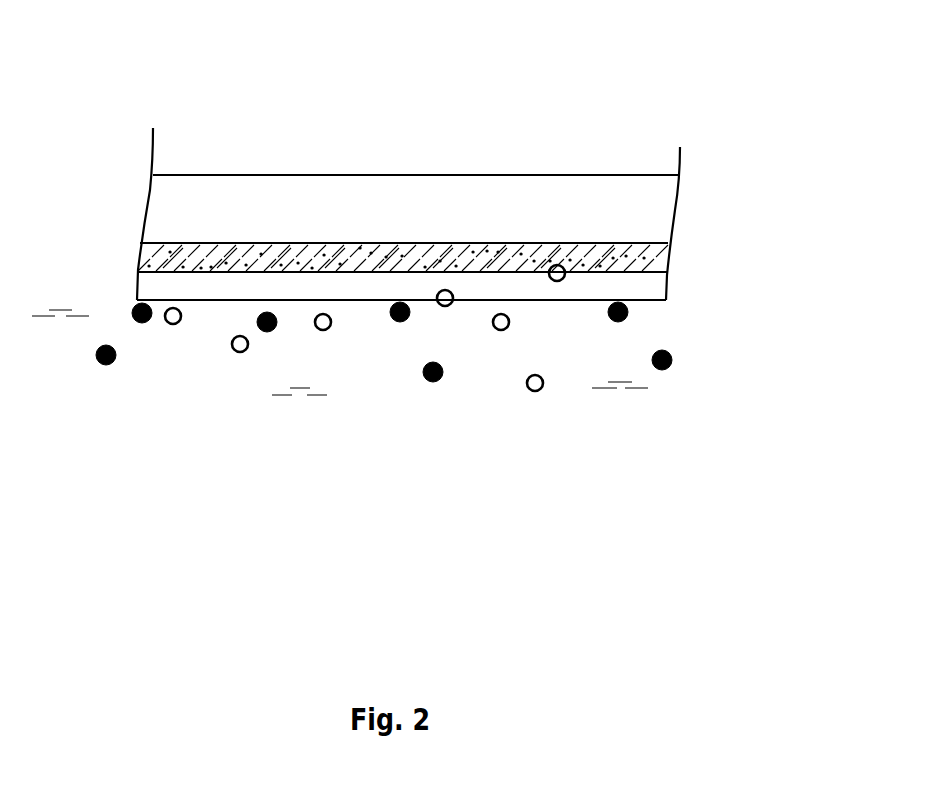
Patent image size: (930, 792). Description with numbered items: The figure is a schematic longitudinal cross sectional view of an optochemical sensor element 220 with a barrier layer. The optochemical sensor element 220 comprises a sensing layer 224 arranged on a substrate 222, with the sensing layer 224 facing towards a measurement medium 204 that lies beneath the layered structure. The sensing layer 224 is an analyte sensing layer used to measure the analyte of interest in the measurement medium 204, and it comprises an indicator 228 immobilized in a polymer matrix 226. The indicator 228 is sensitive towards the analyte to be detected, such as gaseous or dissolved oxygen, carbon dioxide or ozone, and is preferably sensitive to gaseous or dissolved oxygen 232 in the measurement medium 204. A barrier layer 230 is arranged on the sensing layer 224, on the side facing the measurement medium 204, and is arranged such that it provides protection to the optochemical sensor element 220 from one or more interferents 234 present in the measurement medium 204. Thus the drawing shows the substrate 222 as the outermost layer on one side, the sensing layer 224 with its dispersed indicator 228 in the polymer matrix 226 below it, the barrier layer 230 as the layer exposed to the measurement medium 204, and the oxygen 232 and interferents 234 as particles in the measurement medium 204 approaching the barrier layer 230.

The optochemical sensor element 220 is at (155, 102).
The substrate 222 is at (623, 185).
The sensing layer 224 is at (670, 248).
The indicator 228 is at (652, 262).
The polymer matrix 226 is at (667, 275).
The barrier layer 230 is at (625, 287).
The gaseous or dissolved oxygen 232 is at (545, 393).
The interferents 234 is at (667, 372).
The measurement medium 204 is at (238, 430).